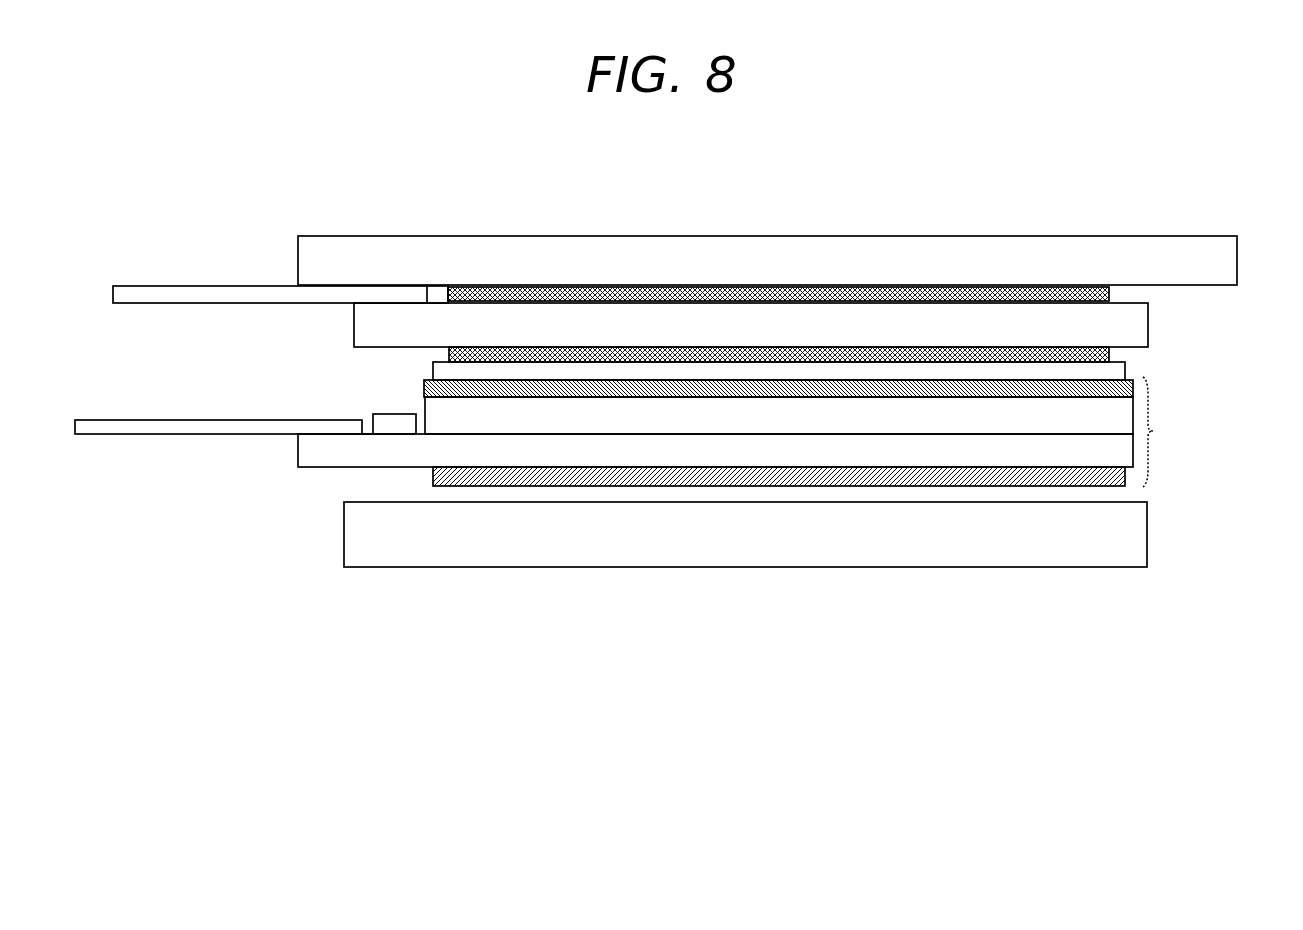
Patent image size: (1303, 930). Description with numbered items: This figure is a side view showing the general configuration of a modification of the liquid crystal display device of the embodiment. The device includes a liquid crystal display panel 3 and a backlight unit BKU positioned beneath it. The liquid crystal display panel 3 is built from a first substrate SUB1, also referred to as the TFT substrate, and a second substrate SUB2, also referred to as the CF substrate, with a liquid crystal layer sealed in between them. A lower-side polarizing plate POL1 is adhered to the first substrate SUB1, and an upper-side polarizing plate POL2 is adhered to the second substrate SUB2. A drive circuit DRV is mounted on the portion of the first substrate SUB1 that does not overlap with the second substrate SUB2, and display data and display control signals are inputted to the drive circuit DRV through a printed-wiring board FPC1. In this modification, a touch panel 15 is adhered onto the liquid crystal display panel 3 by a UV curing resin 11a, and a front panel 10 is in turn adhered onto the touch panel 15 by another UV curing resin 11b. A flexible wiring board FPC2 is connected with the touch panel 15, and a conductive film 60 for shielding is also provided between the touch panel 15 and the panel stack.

The front panel 10 is at (696, 236).
The UV curing resin 11a is at (1070, 347).
The UV curing resin 11b is at (987, 287).
The touch panel 15 is at (1150, 313).
The conductive film for shielding 60 is at (1124, 368).
The upper-side polarizing plate POL2 is at (1143, 378).
The liquid crystal display panel 3 is at (1157, 432).
The lower-side polarizing plate POL1 is at (1128, 476).
The backlight unit BKU is at (1138, 528).
The flexible wiring board FPC2 is at (167, 287).
The printed-wiring board FPC1 is at (128, 437).
The drive circuit DRV is at (397, 425).
The second substrate SUB2 is at (890, 420).
The first substrate SUB1 is at (985, 452).